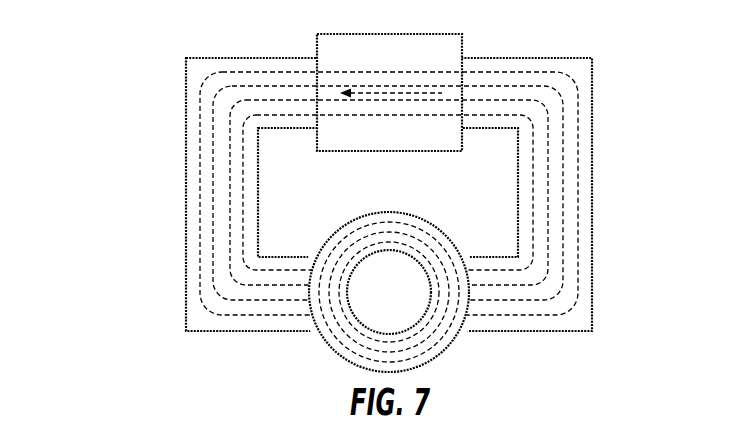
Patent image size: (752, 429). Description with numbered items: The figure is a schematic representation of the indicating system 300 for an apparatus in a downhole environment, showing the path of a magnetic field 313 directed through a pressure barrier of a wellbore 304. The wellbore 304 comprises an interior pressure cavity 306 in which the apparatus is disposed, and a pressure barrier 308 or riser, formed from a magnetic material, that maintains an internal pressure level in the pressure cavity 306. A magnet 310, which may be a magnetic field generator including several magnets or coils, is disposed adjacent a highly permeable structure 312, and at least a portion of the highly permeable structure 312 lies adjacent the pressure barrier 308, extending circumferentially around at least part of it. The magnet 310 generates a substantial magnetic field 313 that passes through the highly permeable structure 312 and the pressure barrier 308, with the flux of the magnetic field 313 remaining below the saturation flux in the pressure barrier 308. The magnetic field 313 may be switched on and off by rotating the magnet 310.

The indicating system 300 is at (138, 64).
The wellbore 304 is at (332, 247).
The pressure cavity 306 is at (393, 298).
The pressure barrier 308 is at (450, 250).
The magnet 310 is at (462, 46).
The highly permeable structure 312 is at (592, 167).
The magnetic field 313 is at (563, 238).